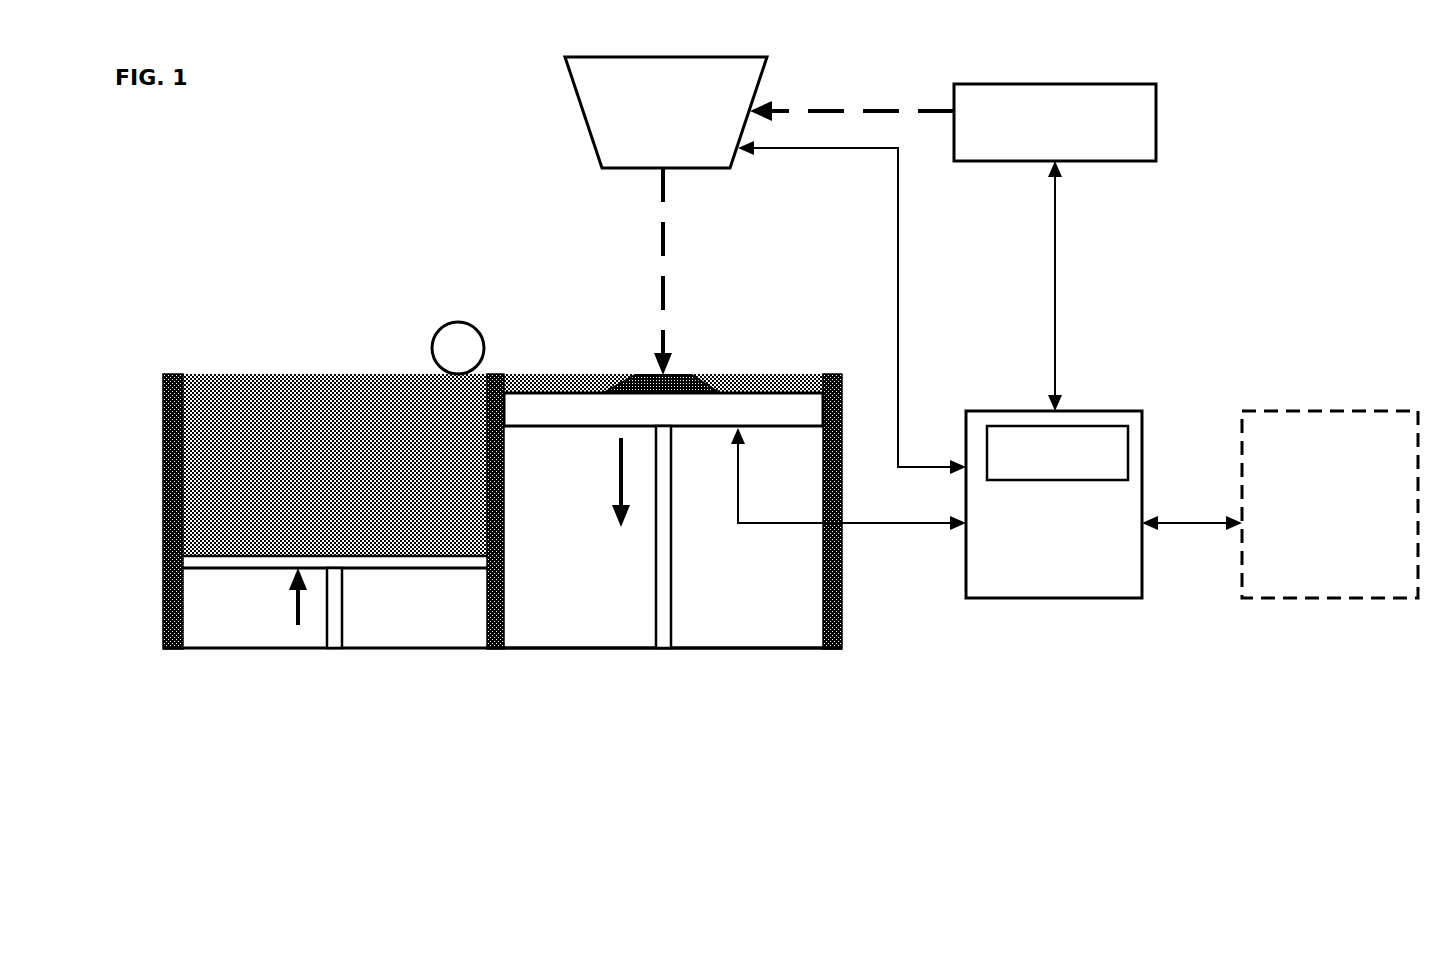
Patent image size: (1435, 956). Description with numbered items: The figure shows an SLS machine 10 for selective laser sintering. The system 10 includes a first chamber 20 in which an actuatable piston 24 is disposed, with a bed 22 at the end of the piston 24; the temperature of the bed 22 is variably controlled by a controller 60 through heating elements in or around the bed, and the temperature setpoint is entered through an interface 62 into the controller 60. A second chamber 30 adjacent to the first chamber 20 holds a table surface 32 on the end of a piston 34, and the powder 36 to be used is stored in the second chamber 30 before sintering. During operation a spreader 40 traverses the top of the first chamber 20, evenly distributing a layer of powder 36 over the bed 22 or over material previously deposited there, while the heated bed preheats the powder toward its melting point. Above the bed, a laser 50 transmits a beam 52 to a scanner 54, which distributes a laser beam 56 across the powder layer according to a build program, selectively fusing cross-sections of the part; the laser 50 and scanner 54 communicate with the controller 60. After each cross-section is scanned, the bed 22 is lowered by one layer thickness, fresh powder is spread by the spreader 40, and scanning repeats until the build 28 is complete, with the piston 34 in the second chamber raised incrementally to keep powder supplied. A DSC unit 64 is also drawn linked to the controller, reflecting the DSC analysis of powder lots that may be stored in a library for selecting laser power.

The SLS machine 10 is at (412, 106).
The first chamber 20 is at (578, 610).
The bed 22 is at (541, 412).
The actuatable piston 24 is at (672, 617).
The build 28 is at (632, 375).
The second chamber 30 is at (240, 625).
The table surface 32 is at (419, 565).
The piston 34 is at (343, 612).
The powder 36 is at (240, 388).
The spreader 40 is at (438, 332).
The laser 50 is at (1120, 84).
The beam 52 is at (820, 111).
The scanner 54 is at (672, 57).
The laser beam 56 is at (665, 277).
The controller 60 is at (1100, 411).
The interface 62 is at (1103, 468).
The differential scanning calorimeter (DSC) 64 is at (1308, 411).